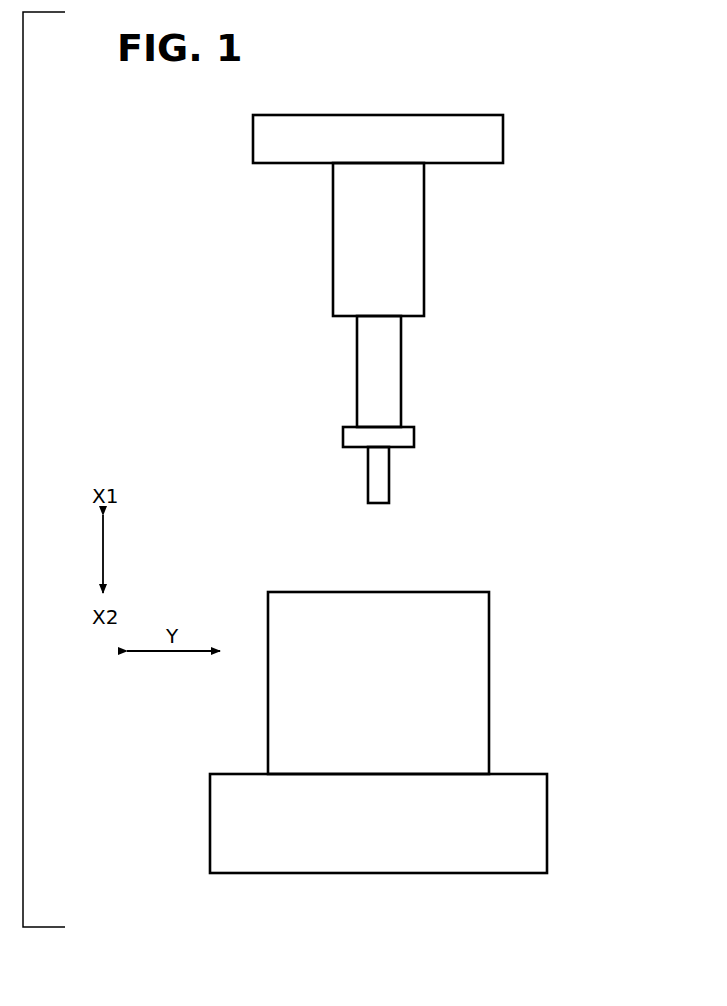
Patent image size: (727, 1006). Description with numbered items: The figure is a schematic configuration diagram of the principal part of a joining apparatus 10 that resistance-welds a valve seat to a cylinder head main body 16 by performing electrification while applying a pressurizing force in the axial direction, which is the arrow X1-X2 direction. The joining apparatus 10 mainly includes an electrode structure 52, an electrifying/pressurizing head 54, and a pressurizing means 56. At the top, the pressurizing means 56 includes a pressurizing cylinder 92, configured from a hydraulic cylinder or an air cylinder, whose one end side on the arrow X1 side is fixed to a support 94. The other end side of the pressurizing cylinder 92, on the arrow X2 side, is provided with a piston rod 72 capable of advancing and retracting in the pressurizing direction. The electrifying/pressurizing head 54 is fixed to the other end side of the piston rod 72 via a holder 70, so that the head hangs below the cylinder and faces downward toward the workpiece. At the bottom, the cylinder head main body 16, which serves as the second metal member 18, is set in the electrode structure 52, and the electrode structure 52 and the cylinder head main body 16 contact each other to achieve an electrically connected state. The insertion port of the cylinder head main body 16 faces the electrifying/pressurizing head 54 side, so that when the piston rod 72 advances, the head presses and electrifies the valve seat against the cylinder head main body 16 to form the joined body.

The joining apparatus 10 is at (568, 86).
The support 94 is at (494, 139).
The pressurizing cylinder 92 is at (343, 238).
The pressurizing means 56 is at (404, 215).
The piston rod 72 is at (388, 384).
The holder 70 is at (403, 435).
The electrifying/pressurizing head 54 is at (400, 483).
The cylinder head main body 16 is at (432, 683).
The second metal member 18 is at (490, 635).
The electrode structure 52 is at (538, 827).